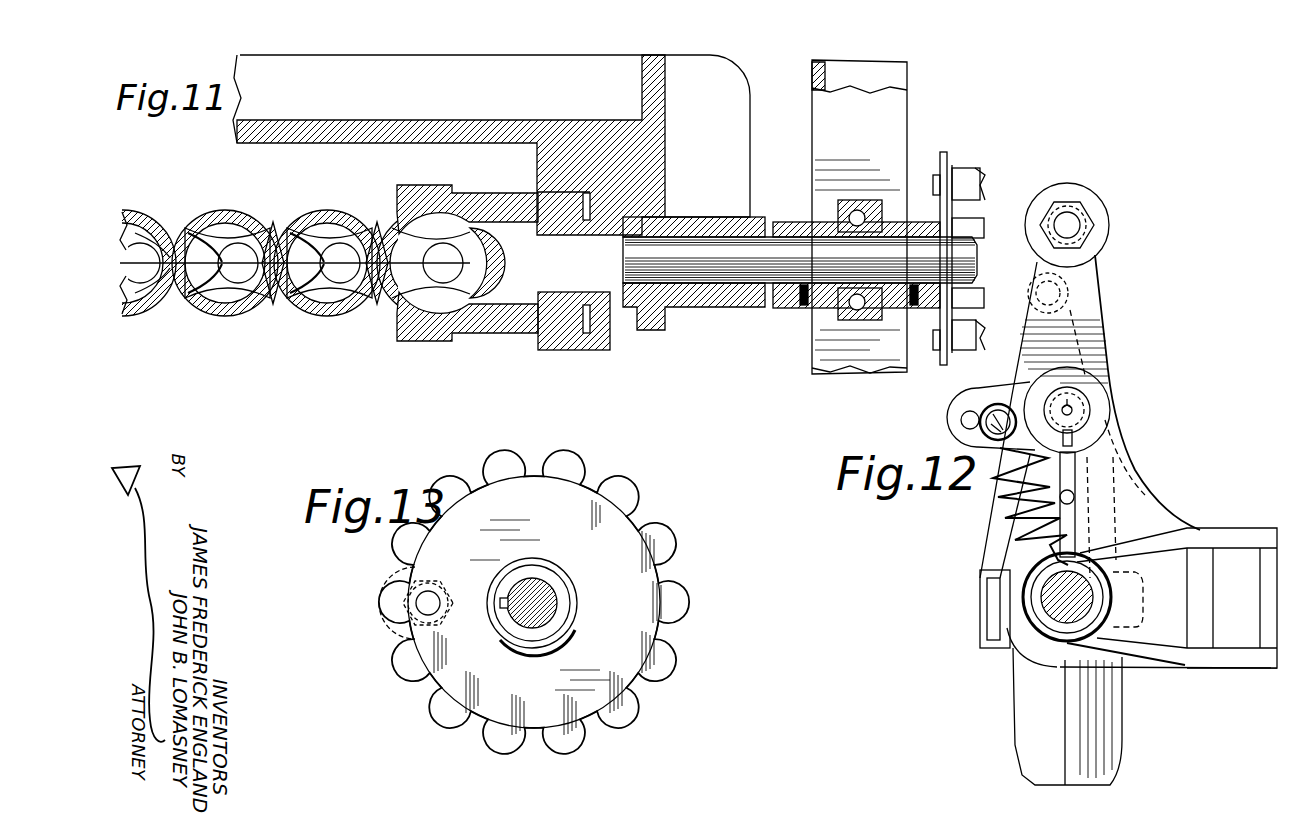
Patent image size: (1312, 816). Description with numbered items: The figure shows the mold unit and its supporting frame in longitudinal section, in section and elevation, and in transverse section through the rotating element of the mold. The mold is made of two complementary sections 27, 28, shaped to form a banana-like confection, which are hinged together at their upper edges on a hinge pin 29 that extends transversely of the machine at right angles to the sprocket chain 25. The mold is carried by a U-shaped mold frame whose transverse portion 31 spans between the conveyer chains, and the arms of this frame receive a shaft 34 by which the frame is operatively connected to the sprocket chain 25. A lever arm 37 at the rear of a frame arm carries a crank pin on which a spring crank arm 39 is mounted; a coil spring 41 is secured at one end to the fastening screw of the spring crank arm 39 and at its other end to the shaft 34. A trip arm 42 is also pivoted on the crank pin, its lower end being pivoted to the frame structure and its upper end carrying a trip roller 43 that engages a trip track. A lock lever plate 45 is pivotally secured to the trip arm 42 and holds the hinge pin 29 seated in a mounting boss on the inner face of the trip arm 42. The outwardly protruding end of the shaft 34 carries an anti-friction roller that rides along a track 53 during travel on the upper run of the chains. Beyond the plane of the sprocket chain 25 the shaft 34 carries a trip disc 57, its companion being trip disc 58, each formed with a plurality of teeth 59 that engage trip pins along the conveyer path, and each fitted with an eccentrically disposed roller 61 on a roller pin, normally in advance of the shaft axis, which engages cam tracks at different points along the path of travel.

In FIG. 11, the sprocket chain 25 is at (965, 180).
In FIG. 11, the mold section 27 is at (328, 318).
In FIG. 12, the mold section 27 is at (1035, 753).
In FIG. 11, the mold section 28 is at (292, 220).
In FIG. 12, the mold section 28 is at (1095, 752).
In FIG. 12, the hinge pin 29 is at (1095, 400).
In FIG. 11, the transverse portion 31 is at (545, 120).
In FIG. 12, the transverse portion 31 is at (1250, 537).
In FIG. 11, the shaft 34 is at (713, 268).
In FIG. 12, the shaft 34 is at (1055, 620).
In FIG. 13, the shaft 34 is at (548, 615).
In FIG. 12, the lever arm 37 is at (1118, 480).
In FIG. 12, the spring crank arm 39 is at (1040, 283).
In FIG. 12, the coil spring 41 is at (1000, 502).
In FIG. 12, the trip arm 42 is at (1085, 285).
In FIG. 12, the trip roller 43 is at (1100, 222).
In FIG. 12, the lock lever plate 45 is at (1037, 265).
In FIG. 11, the track 53 is at (888, 118).
In FIG. 13, the trip disc 57 is at (647, 510).
In FIG. 13, the trip disc 58 is at (635, 650).
In FIG. 13, the teeth 59 is at (657, 577).
In FIG. 13, the roller 61 is at (423, 603).